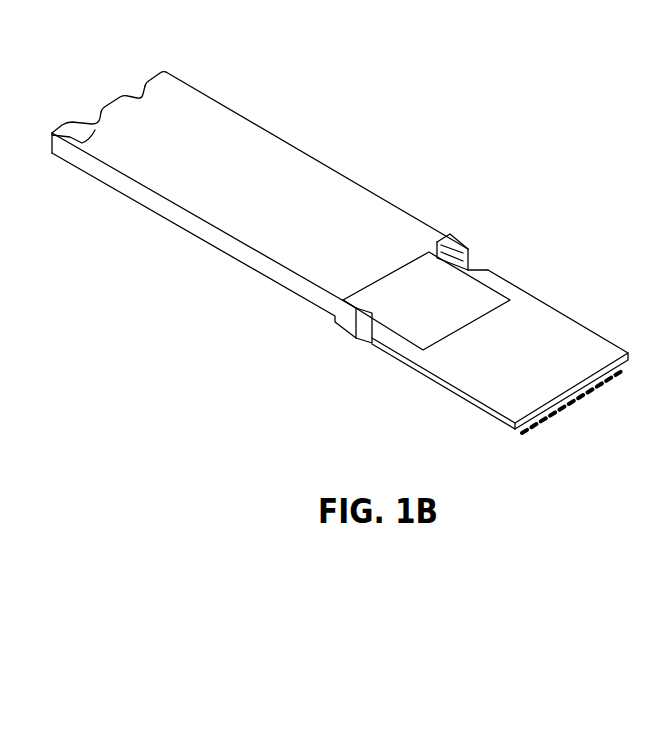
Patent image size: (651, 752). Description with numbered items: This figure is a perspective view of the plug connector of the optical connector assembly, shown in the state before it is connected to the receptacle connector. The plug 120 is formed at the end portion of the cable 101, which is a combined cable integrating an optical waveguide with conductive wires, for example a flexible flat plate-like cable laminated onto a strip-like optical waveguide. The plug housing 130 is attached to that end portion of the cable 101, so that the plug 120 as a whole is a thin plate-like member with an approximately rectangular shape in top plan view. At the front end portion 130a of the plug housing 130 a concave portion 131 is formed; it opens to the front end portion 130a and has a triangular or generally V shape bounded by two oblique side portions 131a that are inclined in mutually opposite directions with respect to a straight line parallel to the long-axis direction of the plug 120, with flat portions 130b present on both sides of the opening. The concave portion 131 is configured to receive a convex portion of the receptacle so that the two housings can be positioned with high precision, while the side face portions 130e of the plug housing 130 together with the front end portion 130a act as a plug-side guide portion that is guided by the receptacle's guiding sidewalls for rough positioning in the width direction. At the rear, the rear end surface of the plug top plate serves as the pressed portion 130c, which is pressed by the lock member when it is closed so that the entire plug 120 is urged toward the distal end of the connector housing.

The cable 101 is at (600, 336).
The plug 120 is at (259, 299).
The plug housing 130 is at (384, 200).
The front end portion 130a is at (157, 77).
The flat portion 130b is at (61, 126).
The pressed portion 130c is at (422, 256).
The side face portion 130e is at (92, 171).
The concave portion 131 is at (135, 95).
The oblique side portion 131a is at (56, 139).